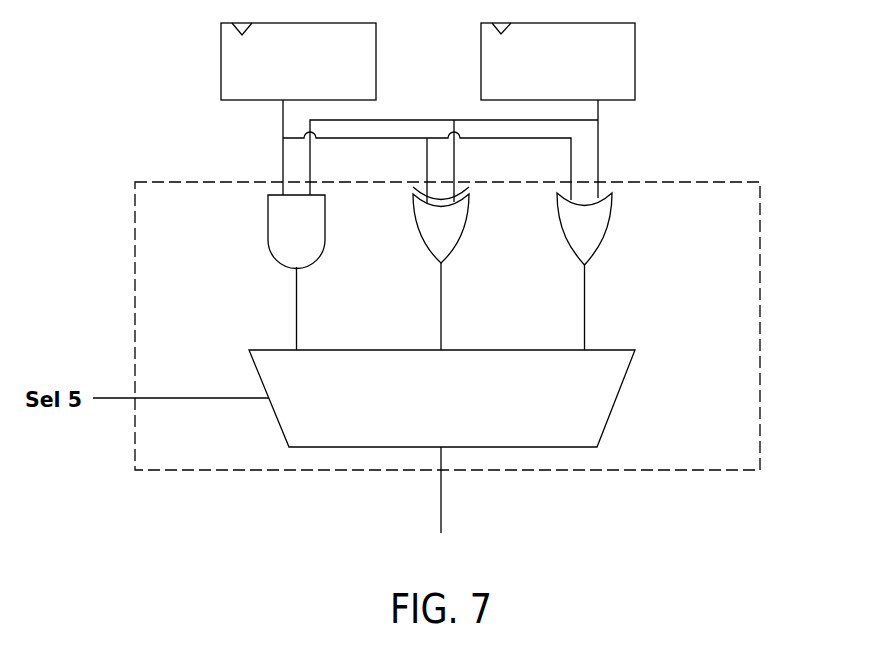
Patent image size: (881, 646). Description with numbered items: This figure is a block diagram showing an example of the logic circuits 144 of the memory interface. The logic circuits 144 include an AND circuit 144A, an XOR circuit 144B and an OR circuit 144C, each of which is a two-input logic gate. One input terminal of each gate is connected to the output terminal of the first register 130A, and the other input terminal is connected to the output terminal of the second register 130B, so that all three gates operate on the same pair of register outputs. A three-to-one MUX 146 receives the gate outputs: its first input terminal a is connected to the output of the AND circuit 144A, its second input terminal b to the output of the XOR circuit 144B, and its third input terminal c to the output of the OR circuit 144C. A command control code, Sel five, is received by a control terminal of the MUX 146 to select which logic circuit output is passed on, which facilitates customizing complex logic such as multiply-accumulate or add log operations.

The first register 130A is at (237, 67).
The second register 130B is at (620, 67).
The logic circuits 144 is at (762, 310).
The AND circuit 144A is at (318, 240).
The XOR circuit 144B is at (462, 240).
The OR circuit 144C is at (605, 242).
The 3-1 MUX 146 is at (612, 403).